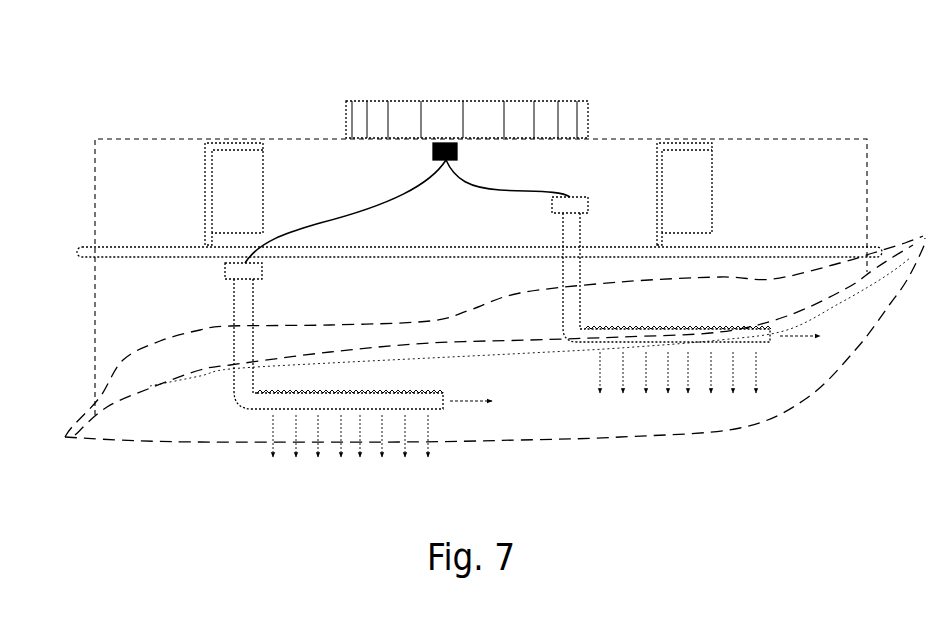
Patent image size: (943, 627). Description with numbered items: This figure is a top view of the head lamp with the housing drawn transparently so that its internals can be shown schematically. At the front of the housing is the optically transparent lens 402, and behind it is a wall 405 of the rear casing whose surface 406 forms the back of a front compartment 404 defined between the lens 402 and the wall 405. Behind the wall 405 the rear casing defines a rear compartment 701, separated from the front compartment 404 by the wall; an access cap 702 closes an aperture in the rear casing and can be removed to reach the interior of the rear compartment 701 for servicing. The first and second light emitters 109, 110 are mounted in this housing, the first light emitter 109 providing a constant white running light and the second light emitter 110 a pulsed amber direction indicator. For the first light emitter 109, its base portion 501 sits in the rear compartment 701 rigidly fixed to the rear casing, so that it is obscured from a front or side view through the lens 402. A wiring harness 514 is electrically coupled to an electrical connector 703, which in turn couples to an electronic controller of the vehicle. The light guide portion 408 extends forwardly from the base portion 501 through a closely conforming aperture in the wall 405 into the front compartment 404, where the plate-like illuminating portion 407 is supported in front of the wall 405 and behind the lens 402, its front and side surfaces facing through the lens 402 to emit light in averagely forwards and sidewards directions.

The rear compartment 701 is at (440, 240).
The access cap 702 is at (541, 110).
The electrical connector 703 is at (447, 143).
The wiring harness 514 is at (320, 223).
The base portion 501 is at (222, 270).
The front compartment 404 is at (576, 388).
The illuminating portion 407 is at (262, 433).
The lens 402 is at (855, 353).
The light guide portion 408 is at (222, 346).
The wall 405 is at (772, 280).
The surface 406 is at (528, 295).
The first light emitter 109 is at (330, 510).
The second light emitter 110 is at (652, 462).